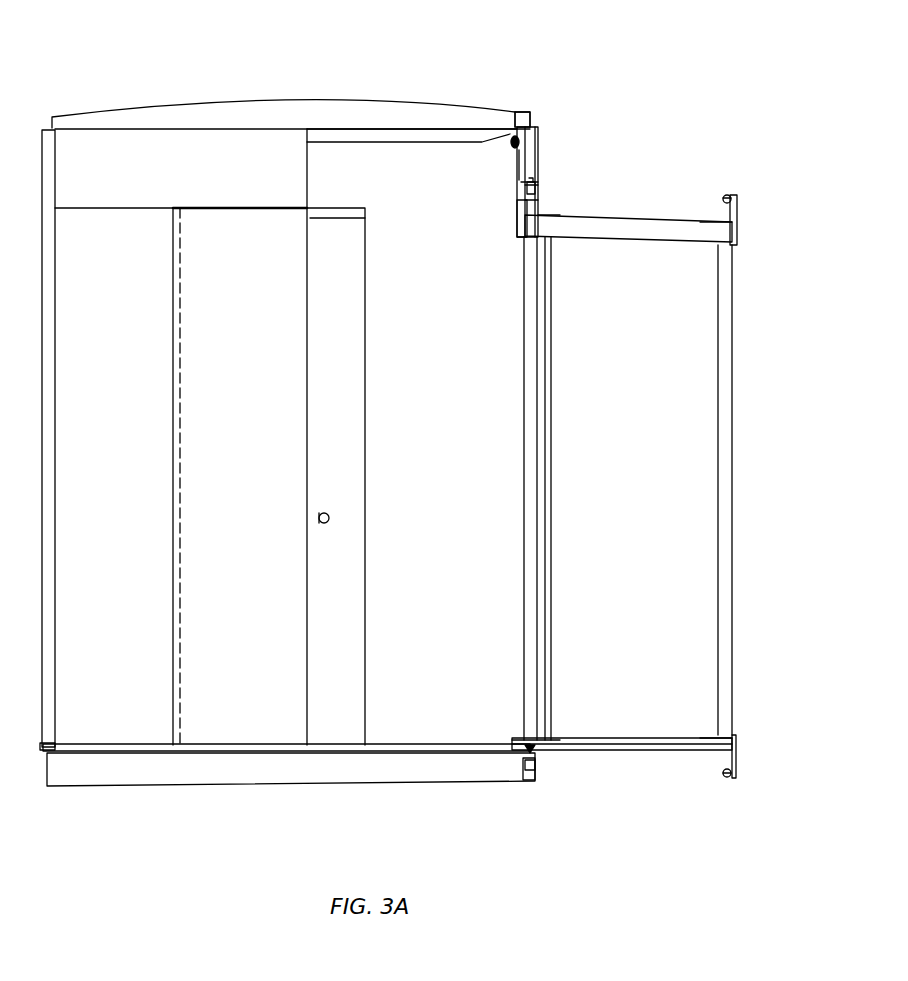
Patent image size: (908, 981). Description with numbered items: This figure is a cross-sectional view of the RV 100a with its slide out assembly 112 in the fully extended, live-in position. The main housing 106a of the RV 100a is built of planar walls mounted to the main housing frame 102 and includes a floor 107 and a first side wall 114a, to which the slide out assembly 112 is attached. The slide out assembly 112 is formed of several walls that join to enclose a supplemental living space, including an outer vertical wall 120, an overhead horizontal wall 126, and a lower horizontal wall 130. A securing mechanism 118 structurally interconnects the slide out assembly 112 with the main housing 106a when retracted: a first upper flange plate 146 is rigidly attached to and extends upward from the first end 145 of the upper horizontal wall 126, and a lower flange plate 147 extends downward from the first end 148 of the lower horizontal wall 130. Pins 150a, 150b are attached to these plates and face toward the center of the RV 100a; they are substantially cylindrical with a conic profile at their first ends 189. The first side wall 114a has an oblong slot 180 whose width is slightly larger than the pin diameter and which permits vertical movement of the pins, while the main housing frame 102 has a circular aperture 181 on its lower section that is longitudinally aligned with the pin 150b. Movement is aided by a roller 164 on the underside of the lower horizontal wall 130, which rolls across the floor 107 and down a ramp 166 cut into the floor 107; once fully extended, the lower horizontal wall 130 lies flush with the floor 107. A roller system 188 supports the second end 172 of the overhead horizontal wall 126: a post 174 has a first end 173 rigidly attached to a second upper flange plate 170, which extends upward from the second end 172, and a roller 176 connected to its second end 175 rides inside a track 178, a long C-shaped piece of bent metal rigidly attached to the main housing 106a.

The RV 100a is at (683, 68).
The main housing frame 102 is at (298, 770).
The main housing 106a is at (277, 88).
The floor 107 is at (388, 746).
The slide out assembly 112 is at (758, 380).
The first side wall 114a is at (535, 150).
The securing mechanism 118 is at (551, 192).
The outer vertical wall 120 is at (725, 530).
The overhead horizontal wall 126 is at (620, 235).
The lower horizontal wall 130 is at (615, 740).
The first end of the upper horizontal wall 145 is at (710, 220).
The first upper flange plate 146 is at (740, 216).
The lower flange plate 147 is at (740, 746).
The first end of the lower horizontal wall 148 is at (732, 738).
The pin 150a is at (732, 194).
The pin 150b is at (727, 780).
The roller 164 is at (508, 746).
The ramp 166 is at (520, 744).
The second upper flange plate 170 is at (522, 222).
The second end of the upper horizontal wall 172 is at (548, 226).
The first end of the post 173 is at (523, 190).
The post 174 is at (520, 174).
The second end of the post 175 is at (512, 147).
The roller 176 is at (516, 112).
The track 178 is at (338, 128).
The slot 180 is at (540, 185).
The aperture 181 is at (530, 781).
The roller system 188 is at (380, 148).
The first ends of the pins 189 is at (727, 196).